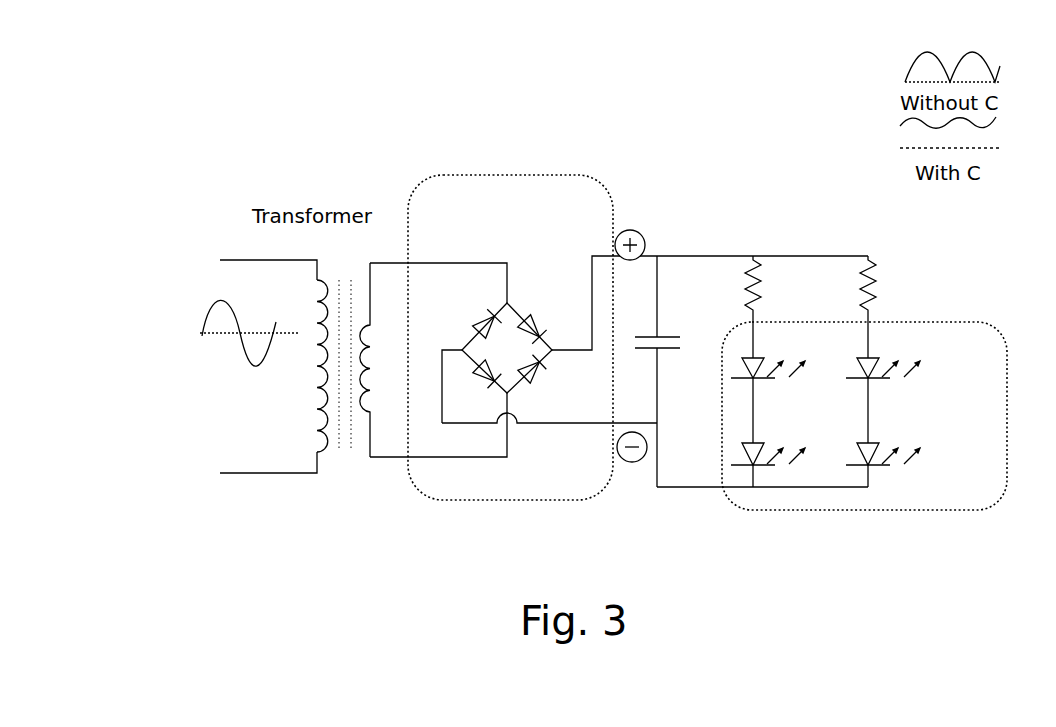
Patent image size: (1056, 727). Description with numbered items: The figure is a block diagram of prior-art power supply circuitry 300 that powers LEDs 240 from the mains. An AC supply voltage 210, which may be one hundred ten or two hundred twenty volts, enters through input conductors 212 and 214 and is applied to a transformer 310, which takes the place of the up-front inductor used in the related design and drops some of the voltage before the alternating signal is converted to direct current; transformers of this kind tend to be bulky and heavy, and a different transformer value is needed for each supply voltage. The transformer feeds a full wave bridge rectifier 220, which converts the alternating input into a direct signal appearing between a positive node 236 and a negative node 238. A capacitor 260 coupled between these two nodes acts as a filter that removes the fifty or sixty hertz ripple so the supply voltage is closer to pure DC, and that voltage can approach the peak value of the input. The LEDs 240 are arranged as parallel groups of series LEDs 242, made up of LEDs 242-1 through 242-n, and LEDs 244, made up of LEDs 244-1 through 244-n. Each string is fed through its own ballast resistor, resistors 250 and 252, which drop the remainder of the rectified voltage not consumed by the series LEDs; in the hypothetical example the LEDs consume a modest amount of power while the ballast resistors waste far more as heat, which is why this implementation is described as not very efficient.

The power supply circuitry 300 is at (638, 90).
The AC supply voltage 210 is at (208, 322).
The input conductor 212 is at (231, 257).
The input conductor 214 is at (228, 477).
The transformer 310 is at (337, 458).
The full wave bridge rectifier 220 is at (500, 176).
The node (+) 236 is at (652, 244).
The node (−) 238 is at (650, 476).
The capacitor 260 is at (668, 336).
The ballast resistor 252 is at (764, 300).
The ballast resistor 250 is at (878, 278).
The LEDs 240 is at (762, 508).
The LEDs (series group) 242 is at (902, 389).
The LED 242-1 is at (871, 357).
The LED 242-n is at (871, 442).
The LEDs (series group) 244 is at (792, 436).
The LED 244-1 is at (758, 358).
The LED 244-n is at (800, 473).